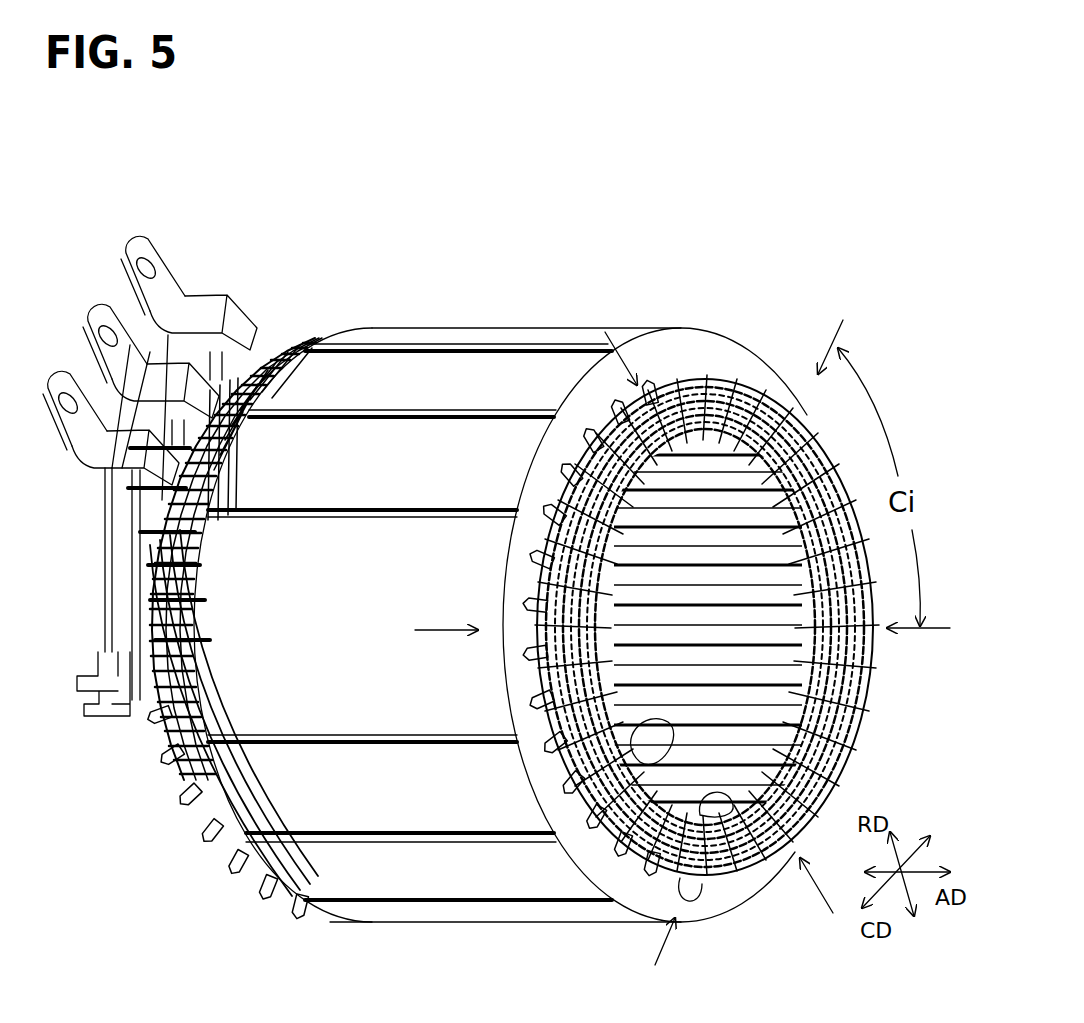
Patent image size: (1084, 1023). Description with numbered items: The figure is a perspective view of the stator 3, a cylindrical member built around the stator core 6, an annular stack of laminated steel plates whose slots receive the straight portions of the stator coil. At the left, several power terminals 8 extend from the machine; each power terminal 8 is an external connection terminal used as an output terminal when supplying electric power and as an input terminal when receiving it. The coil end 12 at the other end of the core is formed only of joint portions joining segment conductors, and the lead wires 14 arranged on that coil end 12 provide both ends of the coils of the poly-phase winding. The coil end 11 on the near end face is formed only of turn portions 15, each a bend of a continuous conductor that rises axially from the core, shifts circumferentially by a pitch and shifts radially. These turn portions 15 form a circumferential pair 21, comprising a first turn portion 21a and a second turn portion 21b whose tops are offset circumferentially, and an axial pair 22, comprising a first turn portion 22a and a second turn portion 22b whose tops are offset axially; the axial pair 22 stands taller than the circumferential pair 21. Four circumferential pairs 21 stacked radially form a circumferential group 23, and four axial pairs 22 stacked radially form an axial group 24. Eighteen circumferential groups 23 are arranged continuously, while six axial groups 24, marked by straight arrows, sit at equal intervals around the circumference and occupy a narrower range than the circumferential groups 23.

The stator 3 is at (365, 308).
The stator core 6 is at (478, 326).
The power terminal 8 is at (182, 292).
The coil end 11 is at (885, 668).
The coil end 12 is at (148, 815).
The lead wire 14 is at (868, 710).
The turn portion 15 is at (215, 862).
The circumferential pair 21 is at (412, 446).
The first turn portion 21a is at (556, 476).
The second turn portion 21b is at (540, 510).
The axial pair 22 is at (390, 543).
The first turn portion 22a is at (530, 566).
The second turn portion 22b is at (524, 603).
The circumferential group 23 is at (562, 790).
The axial group 24 is at (700, 882).